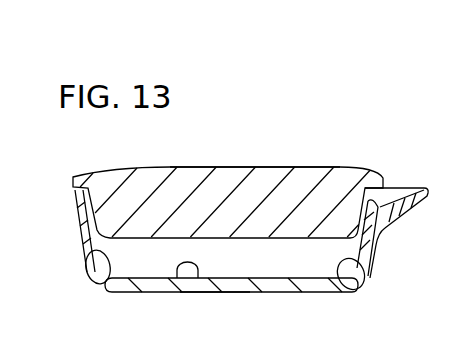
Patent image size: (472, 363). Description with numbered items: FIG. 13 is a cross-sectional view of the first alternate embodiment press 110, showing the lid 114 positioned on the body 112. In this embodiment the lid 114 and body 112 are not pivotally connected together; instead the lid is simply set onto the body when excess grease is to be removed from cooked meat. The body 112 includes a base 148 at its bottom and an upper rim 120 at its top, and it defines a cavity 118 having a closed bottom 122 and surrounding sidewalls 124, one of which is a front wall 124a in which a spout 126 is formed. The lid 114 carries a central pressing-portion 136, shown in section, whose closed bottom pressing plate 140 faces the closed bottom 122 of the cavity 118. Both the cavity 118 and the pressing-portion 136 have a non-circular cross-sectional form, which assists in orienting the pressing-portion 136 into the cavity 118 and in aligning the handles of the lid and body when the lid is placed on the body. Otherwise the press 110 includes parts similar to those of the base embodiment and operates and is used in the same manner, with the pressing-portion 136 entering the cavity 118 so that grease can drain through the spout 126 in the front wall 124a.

The press 110 is at (268, 122).
The body 112 is at (270, 280).
The lid 114 is at (158, 174).
The cavity 118 is at (141, 265).
The upper rim 120 is at (414, 188).
The closed bottom 122 is at (176, 278).
The surrounding sidewalls 124 is at (96, 283).
The front wall 124a is at (355, 283).
The spout 126 is at (374, 232).
The pressing-portion 136 is at (257, 215).
The closed bottom pressing plate 140 is at (90, 240).
The base 148 is at (214, 293).